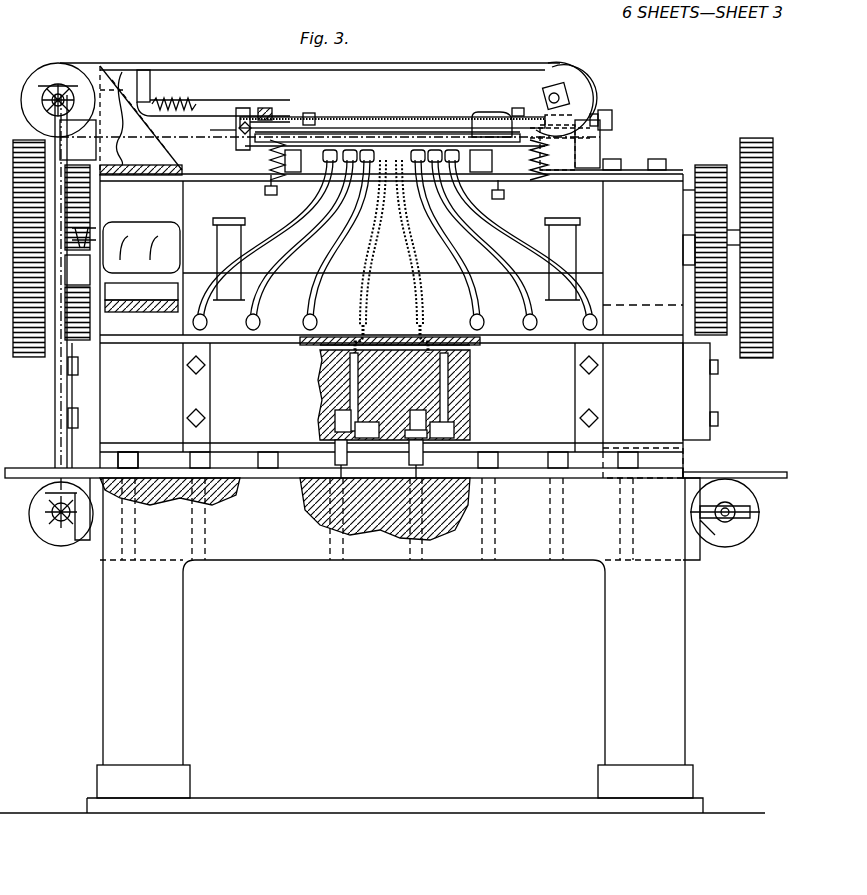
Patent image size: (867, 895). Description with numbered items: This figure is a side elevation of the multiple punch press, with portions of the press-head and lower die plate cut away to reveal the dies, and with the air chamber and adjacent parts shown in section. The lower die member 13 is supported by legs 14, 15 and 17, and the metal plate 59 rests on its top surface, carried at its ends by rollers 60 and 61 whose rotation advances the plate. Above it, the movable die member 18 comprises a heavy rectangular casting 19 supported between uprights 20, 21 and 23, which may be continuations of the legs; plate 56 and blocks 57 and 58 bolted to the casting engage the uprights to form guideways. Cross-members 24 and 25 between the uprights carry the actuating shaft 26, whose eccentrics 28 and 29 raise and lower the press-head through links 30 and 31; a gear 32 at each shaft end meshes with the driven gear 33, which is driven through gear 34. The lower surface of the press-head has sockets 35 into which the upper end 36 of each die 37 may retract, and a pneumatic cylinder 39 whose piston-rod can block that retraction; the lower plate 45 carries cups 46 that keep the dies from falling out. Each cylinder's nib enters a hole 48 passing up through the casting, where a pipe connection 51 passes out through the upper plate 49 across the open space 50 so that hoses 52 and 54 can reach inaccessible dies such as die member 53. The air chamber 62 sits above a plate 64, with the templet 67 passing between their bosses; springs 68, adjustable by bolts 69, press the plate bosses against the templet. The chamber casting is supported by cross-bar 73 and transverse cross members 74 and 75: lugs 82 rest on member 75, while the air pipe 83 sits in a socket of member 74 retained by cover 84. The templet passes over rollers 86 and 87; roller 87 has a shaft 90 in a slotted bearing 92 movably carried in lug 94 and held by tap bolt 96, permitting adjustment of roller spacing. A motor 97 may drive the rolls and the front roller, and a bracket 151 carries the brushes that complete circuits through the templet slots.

The lower die member 13 is at (478, 562).
The leg 14 is at (605, 673).
The leg 15 is at (183, 678).
The leg 17 is at (665, 640).
The movable die member 18 is at (391, 389).
The casting 19 is at (250, 440).
The upright 20 is at (655, 397).
The upright 21 is at (115, 393).
The upright 23 is at (655, 413).
The cross-member 24 is at (640, 305).
The cross-member 25 is at (165, 305).
The actuating shaft 26 is at (395, 240).
The eccentric 28 is at (552, 228).
The eccentric 29 is at (247, 232).
The link 30 is at (563, 316).
The link 31 is at (252, 300).
The gear 32 is at (88, 335).
The driven gear 33 is at (52, 330).
The gear 34 is at (60, 360).
The socket 35 is at (427, 418).
The upper end of die 36 is at (424, 470).
The die 37 is at (348, 468).
The pneumatic cylinder 39 is at (455, 430).
The plate 45 is at (560, 452).
The cup 46 is at (548, 462).
The hole 48 is at (322, 378).
The plate 49 is at (343, 340).
The open space 50 is at (396, 345).
The pipe connection 51 is at (443, 340).
The flexible air connection or hose 52 is at (417, 295).
The die member 53 is at (118, 461).
The air hose 54 is at (207, 305).
The plate 56 is at (80, 436).
The block of metal 57 is at (210, 391).
The block of metal 58 is at (575, 411).
The metal plate 59 is at (538, 478).
The roller 60 is at (66, 546).
The roller 61 is at (735, 545).
The air chamber 62 is at (390, 118).
The plate 64 is at (481, 160).
The templet 67 is at (215, 63).
The spring 68 is at (301, 160).
The bolt 69 is at (265, 191).
The cross-bar 73 is at (483, 178).
The cross member 74 is at (267, 160).
The cross member 75 is at (530, 157).
The lug 82 is at (477, 114).
The air pipe 83 is at (264, 108).
The cover 84 is at (308, 114).
The roller 86 is at (42, 80).
The roller 87 is at (592, 86).
The shaft 90 is at (546, 92).
The bearing 92 is at (547, 100).
The lug 94 is at (601, 140).
The tap bolt 96 is at (613, 118).
The motor 97 is at (126, 247).
The bracket 151 is at (230, 139).